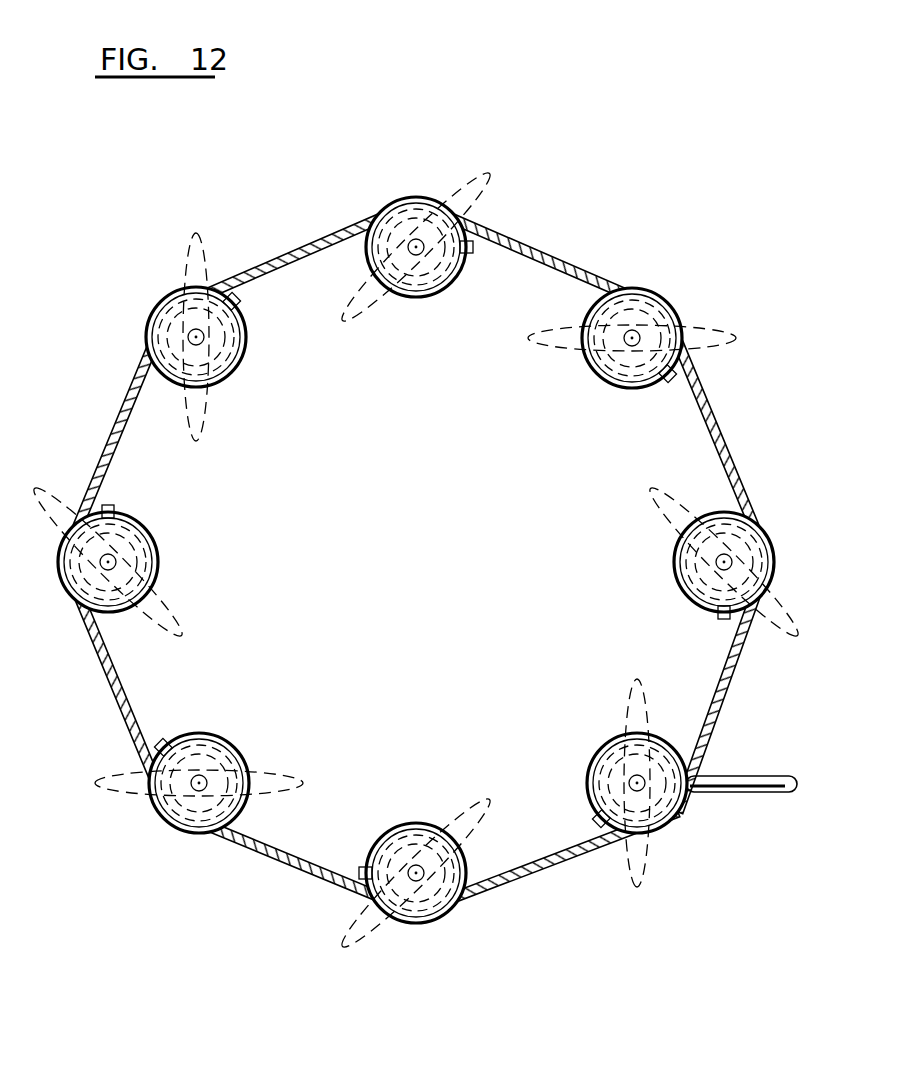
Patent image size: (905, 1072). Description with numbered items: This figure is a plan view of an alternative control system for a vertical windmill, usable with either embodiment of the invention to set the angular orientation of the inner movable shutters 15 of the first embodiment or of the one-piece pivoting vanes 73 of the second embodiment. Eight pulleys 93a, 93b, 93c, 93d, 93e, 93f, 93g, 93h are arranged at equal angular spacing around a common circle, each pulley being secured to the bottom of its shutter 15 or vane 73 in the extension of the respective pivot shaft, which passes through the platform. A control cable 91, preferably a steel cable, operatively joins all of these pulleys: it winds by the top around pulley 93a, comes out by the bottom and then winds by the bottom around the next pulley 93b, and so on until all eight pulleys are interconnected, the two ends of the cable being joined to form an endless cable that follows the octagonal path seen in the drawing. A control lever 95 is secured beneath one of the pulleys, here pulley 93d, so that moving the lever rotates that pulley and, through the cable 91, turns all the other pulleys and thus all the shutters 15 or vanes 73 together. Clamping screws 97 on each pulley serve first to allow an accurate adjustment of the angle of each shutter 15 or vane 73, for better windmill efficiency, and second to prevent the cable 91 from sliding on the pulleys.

The control cable 91 is at (742, 466).
The pulley 93a is at (158, 550).
The pulley 93b is at (237, 743).
The pulley 93c is at (416, 822).
The pulley 93d is at (607, 745).
The pulley 93e is at (683, 546).
The pulley 93f is at (593, 373).
The pulley 93g is at (415, 297).
The pulley 93h is at (230, 382).
The control lever 95 is at (728, 793).
The clamping screws 97 is at (240, 287).
The inner movable shutter 15 is at (425, 543).
The vane 73 is at (447, 197).